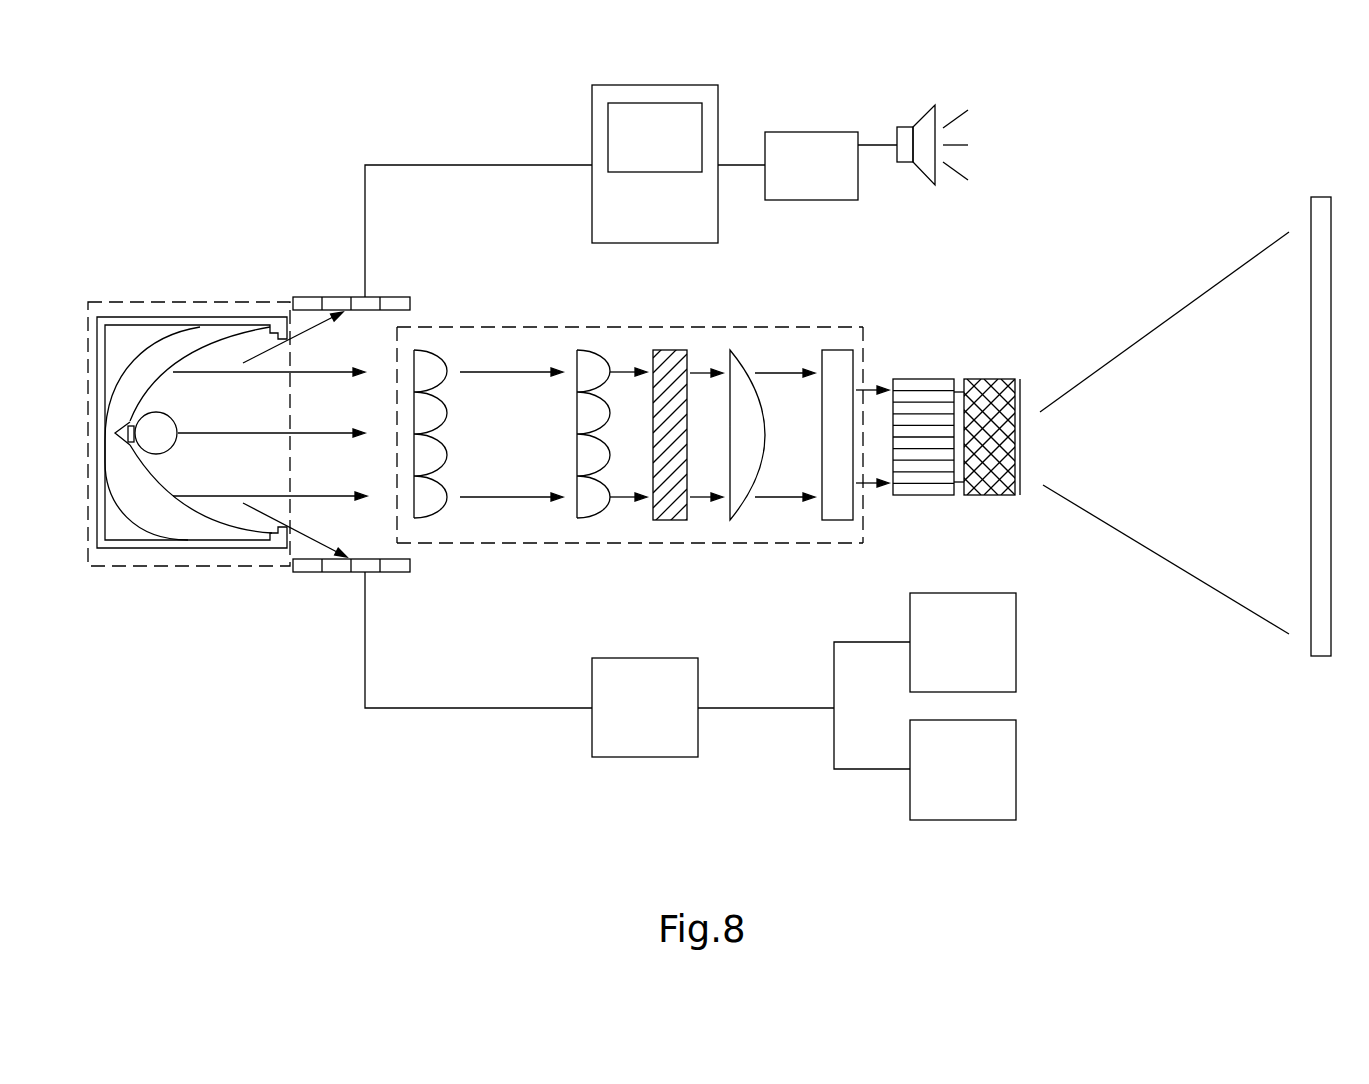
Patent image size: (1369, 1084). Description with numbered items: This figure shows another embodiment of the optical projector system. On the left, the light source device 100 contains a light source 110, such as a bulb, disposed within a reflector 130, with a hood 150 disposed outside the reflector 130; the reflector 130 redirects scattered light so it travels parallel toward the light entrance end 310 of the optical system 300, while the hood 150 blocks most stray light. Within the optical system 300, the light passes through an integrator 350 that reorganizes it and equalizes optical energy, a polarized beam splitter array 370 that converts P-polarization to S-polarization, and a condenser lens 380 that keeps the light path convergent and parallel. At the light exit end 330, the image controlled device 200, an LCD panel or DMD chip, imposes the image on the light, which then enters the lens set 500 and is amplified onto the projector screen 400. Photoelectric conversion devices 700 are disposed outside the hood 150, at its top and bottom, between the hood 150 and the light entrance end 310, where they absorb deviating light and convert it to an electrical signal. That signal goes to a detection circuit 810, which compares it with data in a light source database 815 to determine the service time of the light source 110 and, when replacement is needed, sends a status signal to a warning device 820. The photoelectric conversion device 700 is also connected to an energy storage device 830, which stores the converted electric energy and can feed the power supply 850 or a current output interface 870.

The light source device 100 is at (192, 300).
The light source 110 is at (160, 437).
The reflector 130 is at (145, 372).
The hood 150 is at (160, 323).
The photoelectric conversion device 700 is at (307, 302).
The optical system 300 is at (700, 328).
The light entrance end 310 is at (401, 352).
The light exit end 330 is at (876, 361).
The integrator 350 is at (427, 503).
The polarized beam splitter array 370 is at (670, 513).
The condenser lens 380 is at (742, 487).
The image controlled device 200 is at (833, 508).
The lens set 500 is at (990, 382).
The projector screen 400 is at (1320, 644).
The detection circuit 810 is at (680, 223).
The light source database 815 is at (680, 155).
The warning device 820 is at (837, 183).
The energy storage device 830 is at (670, 728).
The power supply 850 is at (988, 663).
The current output interface 870 is at (988, 793).